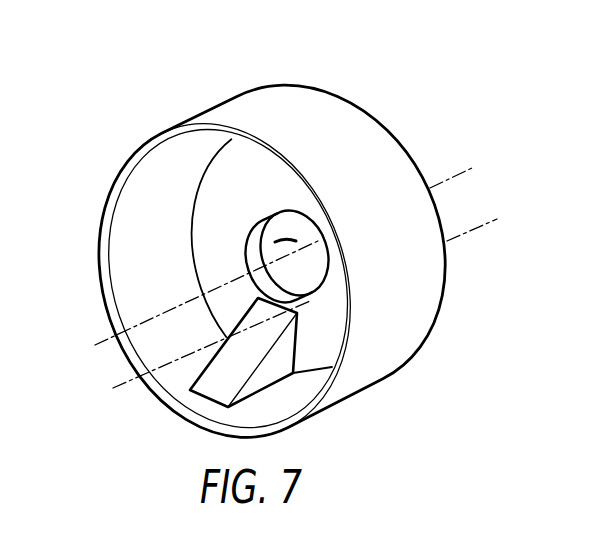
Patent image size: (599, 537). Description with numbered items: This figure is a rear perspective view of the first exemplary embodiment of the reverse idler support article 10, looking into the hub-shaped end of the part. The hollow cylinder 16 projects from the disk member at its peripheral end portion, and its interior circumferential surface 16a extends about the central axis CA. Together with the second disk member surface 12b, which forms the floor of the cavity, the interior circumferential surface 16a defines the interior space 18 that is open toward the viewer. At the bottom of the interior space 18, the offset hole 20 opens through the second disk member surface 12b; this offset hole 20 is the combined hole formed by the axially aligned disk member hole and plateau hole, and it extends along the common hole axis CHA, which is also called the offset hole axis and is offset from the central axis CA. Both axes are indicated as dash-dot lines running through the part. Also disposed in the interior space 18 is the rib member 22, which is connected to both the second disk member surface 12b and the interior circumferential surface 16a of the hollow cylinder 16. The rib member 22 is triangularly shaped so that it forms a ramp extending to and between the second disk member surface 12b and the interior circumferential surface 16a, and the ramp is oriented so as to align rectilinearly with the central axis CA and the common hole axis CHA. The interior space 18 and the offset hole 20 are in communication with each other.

The reverse idler support article 10 is at (470, 275).
The second disk member surface 12b is at (333, 318).
The hollow cylinder 16 is at (308, 106).
The interior circumferential surface 16a is at (182, 385).
The interior space 18 is at (162, 255).
The offset hole 20 is at (283, 236).
The rib member 22 is at (215, 387).
The central axis CA is at (322, 296).
The common hole axis CHA is at (257, 264).